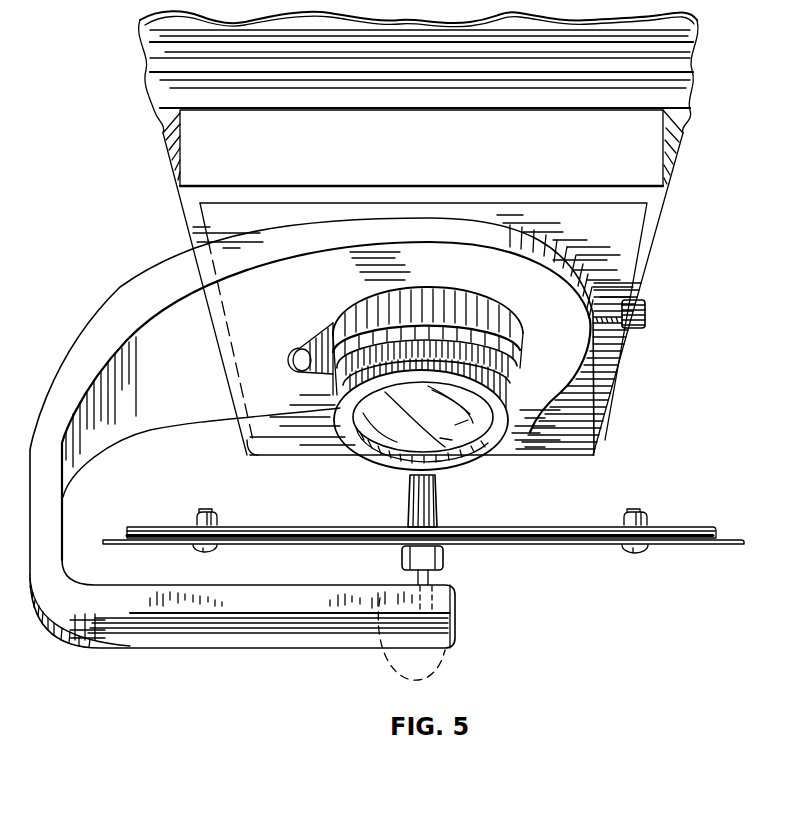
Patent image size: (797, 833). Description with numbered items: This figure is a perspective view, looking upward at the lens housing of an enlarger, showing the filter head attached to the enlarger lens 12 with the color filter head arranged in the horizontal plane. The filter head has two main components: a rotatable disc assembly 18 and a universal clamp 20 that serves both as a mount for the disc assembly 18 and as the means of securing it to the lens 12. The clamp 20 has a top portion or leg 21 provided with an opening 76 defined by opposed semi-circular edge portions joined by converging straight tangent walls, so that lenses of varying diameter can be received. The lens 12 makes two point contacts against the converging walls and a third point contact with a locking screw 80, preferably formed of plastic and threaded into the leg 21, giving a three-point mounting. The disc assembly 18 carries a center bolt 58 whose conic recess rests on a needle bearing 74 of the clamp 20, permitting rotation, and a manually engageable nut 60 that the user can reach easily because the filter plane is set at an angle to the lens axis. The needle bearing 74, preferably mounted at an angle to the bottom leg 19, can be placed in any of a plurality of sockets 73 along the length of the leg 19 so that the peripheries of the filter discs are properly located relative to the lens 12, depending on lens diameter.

The lens 12 is at (482, 450).
The disc assembly 18 is at (688, 522).
The bottom leg 19 is at (300, 641).
The universal clamp 20 is at (126, 662).
The top portion or leg 21 is at (556, 388).
The center bolt 58 is at (443, 557).
The manually engageable nut 60 is at (430, 502).
The sockets 73 is at (418, 645).
The needle bearing 74 is at (428, 578).
The opening 76 is at (300, 370).
The locking screw 80 is at (646, 314).